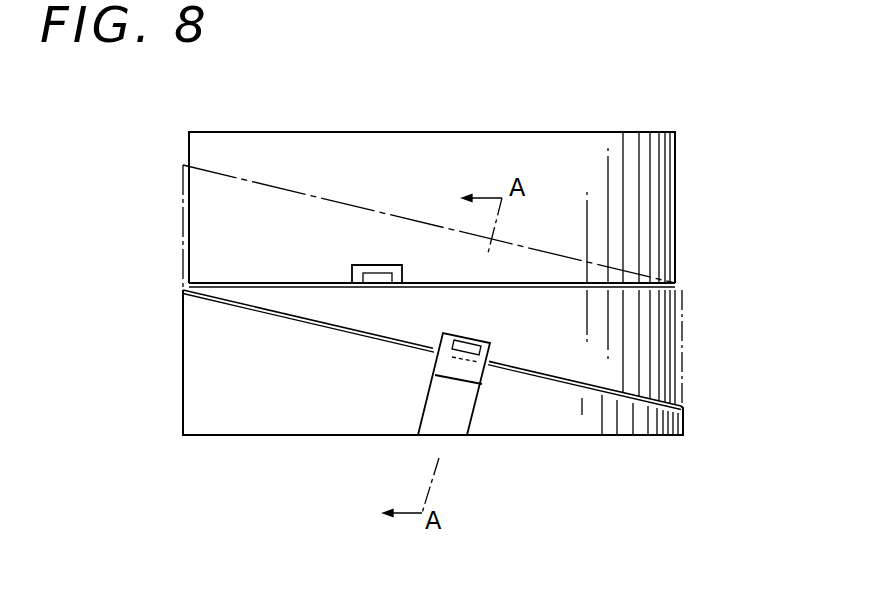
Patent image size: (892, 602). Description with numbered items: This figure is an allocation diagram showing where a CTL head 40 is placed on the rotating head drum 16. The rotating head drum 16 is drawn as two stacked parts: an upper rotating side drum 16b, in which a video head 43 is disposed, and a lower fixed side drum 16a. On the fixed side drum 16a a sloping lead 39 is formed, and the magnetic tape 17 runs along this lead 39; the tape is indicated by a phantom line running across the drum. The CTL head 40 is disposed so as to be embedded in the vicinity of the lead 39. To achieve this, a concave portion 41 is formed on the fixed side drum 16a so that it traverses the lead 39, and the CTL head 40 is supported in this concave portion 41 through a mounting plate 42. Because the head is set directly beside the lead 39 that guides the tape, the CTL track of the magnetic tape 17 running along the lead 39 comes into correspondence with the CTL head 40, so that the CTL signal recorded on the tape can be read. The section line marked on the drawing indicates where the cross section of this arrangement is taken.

The rotating head drum 16 is at (479, 289).
The fixed side drum 16a is at (610, 435).
The rotating side drum 16b is at (580, 132).
The magnetic tape 17 is at (627, 270).
The lead 39 is at (558, 376).
The CTL head 40 is at (468, 343).
The concave portion 41 is at (426, 401).
The mounting plate 42 is at (436, 360).
The video head 43 is at (373, 272).